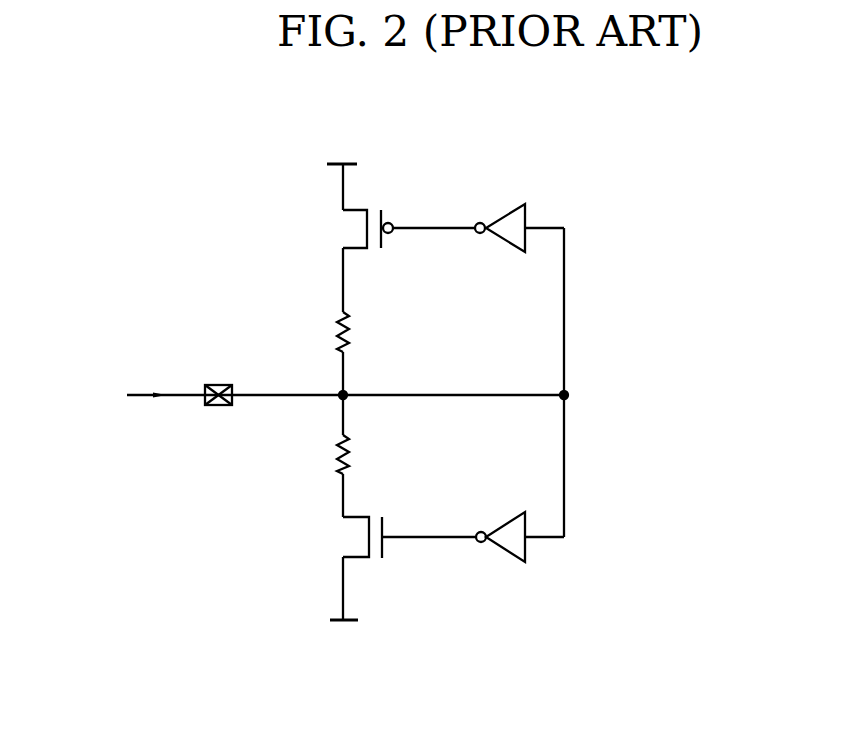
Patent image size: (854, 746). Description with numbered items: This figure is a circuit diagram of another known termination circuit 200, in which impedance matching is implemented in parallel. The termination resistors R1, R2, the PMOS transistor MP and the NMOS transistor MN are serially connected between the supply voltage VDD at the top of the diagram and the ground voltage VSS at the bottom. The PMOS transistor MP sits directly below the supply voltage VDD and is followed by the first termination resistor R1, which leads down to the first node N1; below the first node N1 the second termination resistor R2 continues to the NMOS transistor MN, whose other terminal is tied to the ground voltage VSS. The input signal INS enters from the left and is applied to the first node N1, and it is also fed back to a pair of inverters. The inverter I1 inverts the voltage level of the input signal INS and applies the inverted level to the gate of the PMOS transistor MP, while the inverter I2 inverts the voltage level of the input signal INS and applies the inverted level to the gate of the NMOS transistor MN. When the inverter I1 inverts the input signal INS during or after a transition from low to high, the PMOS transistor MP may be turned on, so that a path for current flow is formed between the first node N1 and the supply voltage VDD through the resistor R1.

The termination circuit 200 is at (568, 141).
The supply voltage VDD is at (340, 170).
The ground voltage VSS is at (345, 608).
The PMOS transistor MP is at (392, 229).
The NMOS transistor MN is at (393, 537).
The termination resistor R1 is at (362, 321).
The termination resistor R2 is at (363, 456).
The inverter I1 is at (519, 211).
The inverter I2 is at (520, 522).
The first node N1 is at (347, 380).
The input signal INS is at (152, 402).